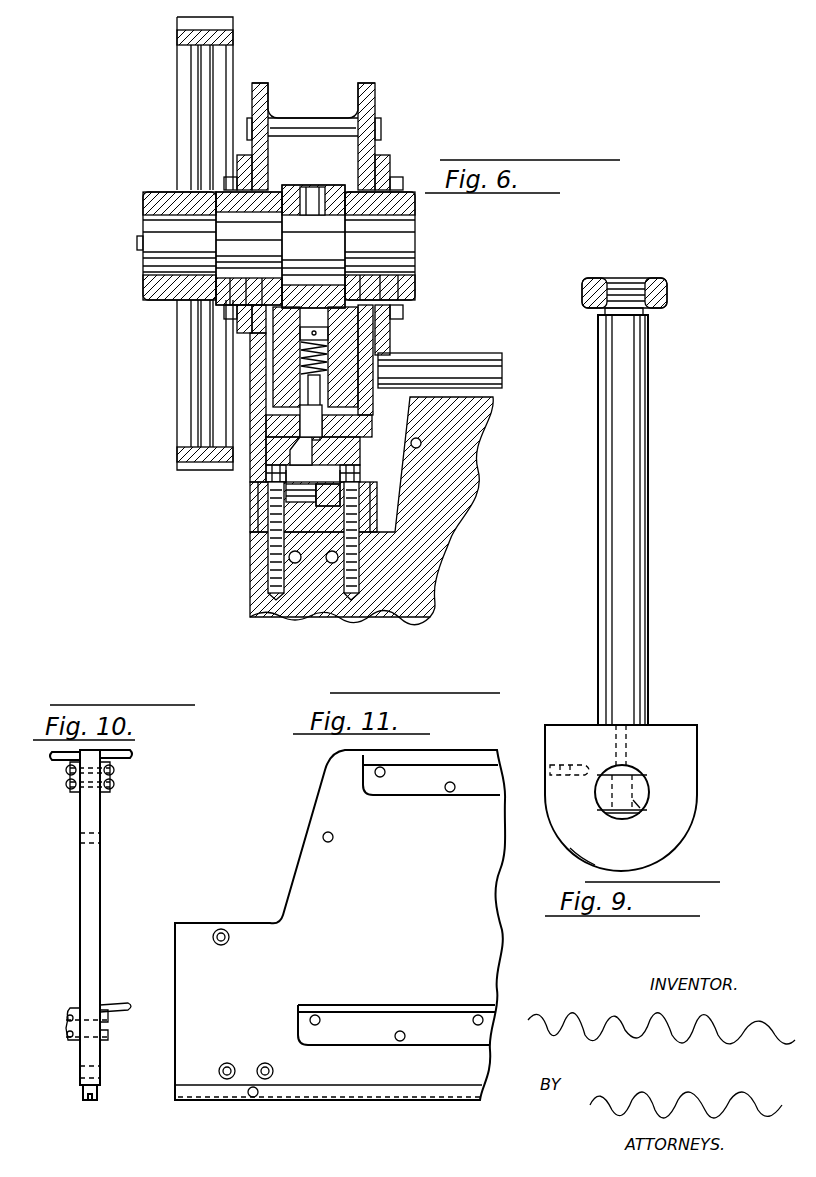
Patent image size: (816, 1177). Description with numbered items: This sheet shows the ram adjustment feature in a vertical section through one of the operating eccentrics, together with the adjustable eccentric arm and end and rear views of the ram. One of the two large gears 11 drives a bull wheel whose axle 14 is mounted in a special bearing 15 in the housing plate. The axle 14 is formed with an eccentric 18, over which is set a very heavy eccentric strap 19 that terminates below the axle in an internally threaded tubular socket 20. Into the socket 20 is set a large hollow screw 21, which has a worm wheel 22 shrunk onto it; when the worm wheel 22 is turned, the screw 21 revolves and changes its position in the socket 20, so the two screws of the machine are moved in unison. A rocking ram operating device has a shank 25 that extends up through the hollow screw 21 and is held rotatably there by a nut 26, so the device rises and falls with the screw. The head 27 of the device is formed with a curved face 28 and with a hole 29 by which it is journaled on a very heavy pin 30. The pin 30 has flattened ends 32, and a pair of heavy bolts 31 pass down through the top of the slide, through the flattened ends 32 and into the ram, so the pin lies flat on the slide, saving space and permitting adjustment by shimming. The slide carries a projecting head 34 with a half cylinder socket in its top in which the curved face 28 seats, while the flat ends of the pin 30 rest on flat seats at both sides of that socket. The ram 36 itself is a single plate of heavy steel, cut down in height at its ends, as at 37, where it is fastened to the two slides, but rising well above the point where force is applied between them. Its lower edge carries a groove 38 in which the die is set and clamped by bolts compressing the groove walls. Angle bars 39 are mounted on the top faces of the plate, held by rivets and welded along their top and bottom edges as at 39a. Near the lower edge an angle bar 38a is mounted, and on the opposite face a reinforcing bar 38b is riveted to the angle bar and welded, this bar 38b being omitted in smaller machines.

In FIG. 6, the large gear 11 is at (492, 372).
In FIG. 6, the axle 14 is at (172, 248).
In FIG. 6, the special bearing 15 is at (250, 198).
In FIG. 6, the eccentric 18 is at (327, 250).
In FIG. 6, the eccentric strap 19 is at (335, 185).
In FIG. 6, the internally threaded tubular socket 20 is at (373, 345).
In FIG. 6, the hollow screw 21 is at (345, 368).
In FIG. 6, the worm wheel 22 is at (360, 430).
In FIG. 6, the shank 25 is at (265, 400).
In FIG. 9, the shank 25 is at (635, 560).
In FIG. 6, the nut 26 is at (283, 335).
In FIG. 9, the nut 26 is at (668, 292).
In FIG. 6, the head 27 is at (345, 500).
In FIG. 9, the head 27 is at (660, 833).
In FIG. 6, the curved face 28 is at (287, 493).
In FIG. 9, the curved face 28 is at (585, 860).
In FIG. 9, the hole 29 is at (630, 762).
In FIG. 6, the pin 30 is at (253, 557).
In FIG. 9, the pin 30 is at (620, 813).
In FIG. 6, the heavy bolt 31 is at (275, 490).
In FIG. 9, the flattened end 32 is at (633, 800).
In FIG. 6, the projecting head 34 is at (286, 480).
In FIG. 6, the ram 36 is at (418, 573).
In FIG. 10, the ram 36 is at (95, 882).
In FIG. 11, the ram 36 is at (340, 925).
In FIG. 6, the cut-down end 37 is at (315, 575).
In FIG. 11, the cut-down end 37 is at (188, 968).
In FIG. 10, the groove 38 is at (88, 1096).
In FIG. 11, the groove 38 is at (216, 1105).
In FIG. 10, the angle bar 38a is at (112, 1006).
In FIG. 11, the angle bar 38a is at (350, 1005).
In FIG. 10, the reinforcing bar 38b is at (70, 1012).
In FIG. 10, the angle bar 39 is at (112, 758).
In FIG. 11, the angle bar 39 is at (395, 785).
In FIG. 10, the weld 39a is at (105, 751).